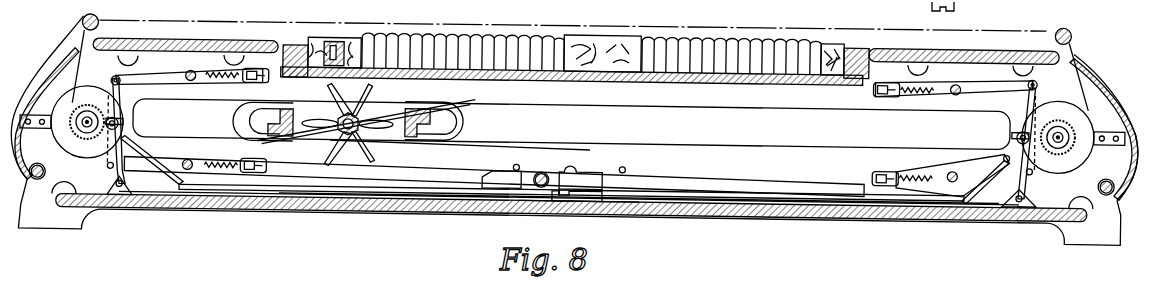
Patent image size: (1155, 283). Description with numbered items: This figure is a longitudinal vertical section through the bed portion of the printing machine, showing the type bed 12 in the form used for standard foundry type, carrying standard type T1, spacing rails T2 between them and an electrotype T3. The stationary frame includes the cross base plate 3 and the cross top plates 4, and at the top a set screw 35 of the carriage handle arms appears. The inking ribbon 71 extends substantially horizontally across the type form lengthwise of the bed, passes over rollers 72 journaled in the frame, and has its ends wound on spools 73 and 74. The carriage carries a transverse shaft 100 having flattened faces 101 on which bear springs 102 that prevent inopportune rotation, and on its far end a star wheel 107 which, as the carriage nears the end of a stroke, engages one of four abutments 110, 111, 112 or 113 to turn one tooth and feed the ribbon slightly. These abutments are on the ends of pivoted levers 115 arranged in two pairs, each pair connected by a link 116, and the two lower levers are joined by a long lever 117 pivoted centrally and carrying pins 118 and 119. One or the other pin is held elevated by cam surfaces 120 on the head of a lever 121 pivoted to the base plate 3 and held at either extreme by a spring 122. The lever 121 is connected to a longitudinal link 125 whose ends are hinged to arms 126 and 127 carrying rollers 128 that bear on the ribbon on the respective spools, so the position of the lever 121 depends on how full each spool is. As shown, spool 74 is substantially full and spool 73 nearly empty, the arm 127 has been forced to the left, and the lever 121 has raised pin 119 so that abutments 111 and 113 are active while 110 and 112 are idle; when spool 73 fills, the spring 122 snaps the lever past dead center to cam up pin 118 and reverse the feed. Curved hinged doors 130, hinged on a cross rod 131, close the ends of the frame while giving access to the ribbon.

The cross base plate 3 is at (882, 222).
The cross top plates 4 is at (236, 40).
The type bed 12 is at (757, 80).
The set screws 35 is at (954, 8).
The inking ribbon 71 is at (1051, 32).
The rollers 72 is at (95, 18).
The spool 73 is at (56, 144).
The spool 74 is at (1089, 155).
The transverse shaft 100 is at (320, 133).
The flattened faces 101 is at (571, 117).
The springs 102 is at (391, 103).
The star wheel 107 is at (352, 108).
The abutment 110 is at (263, 112).
The abutment 111 is at (268, 179).
The abutment 112 is at (870, 175).
The abutment 113 is at (874, 91).
The pivoted levers 115 is at (175, 76).
The link 116 is at (111, 80).
The long lever 117 is at (710, 177).
The projecting pin 118 is at (625, 168).
The projecting pin 119 is at (519, 167).
The cam surfaces 120 is at (542, 177).
The lever 121 is at (530, 212).
The spring 122 is at (547, 168).
The link 125 is at (335, 192).
The arm 126 is at (134, 140).
The arm 127 is at (1022, 187).
The rollers 128 is at (107, 129).
The curved hinged doors 130 is at (48, 56).
The cross rod 131 is at (47, 172).
The standard type T1 is at (824, 42).
The spacing rails T2 is at (792, 40).
The electrotype T3 is at (630, 42).